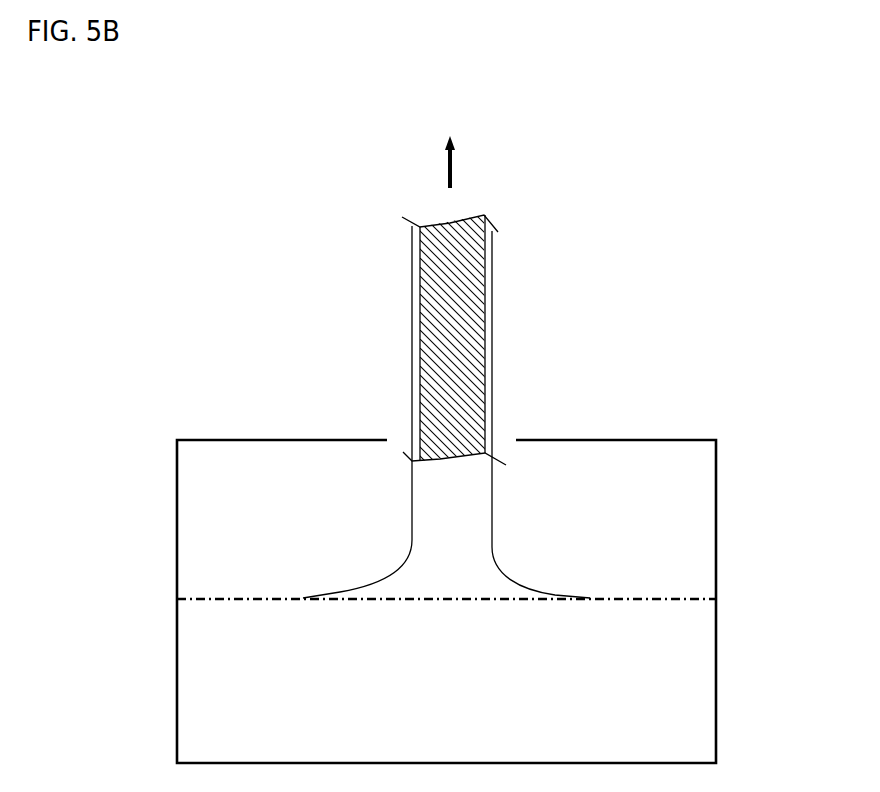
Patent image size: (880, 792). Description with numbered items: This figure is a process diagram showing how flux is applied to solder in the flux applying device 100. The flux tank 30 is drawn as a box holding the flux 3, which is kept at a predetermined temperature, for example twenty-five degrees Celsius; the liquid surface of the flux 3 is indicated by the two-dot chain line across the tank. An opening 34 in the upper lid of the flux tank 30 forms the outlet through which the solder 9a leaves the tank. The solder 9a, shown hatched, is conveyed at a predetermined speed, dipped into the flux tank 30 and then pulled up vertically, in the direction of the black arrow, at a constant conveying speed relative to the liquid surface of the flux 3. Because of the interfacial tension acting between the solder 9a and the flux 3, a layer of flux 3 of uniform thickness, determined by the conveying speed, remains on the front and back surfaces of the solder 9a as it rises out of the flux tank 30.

The flux applying device 100 is at (473, 449).
The flux tank 30 is at (716, 703).
The flux 3 is at (497, 438).
The opening 34 is at (397, 437).
The solder 9a is at (482, 213).